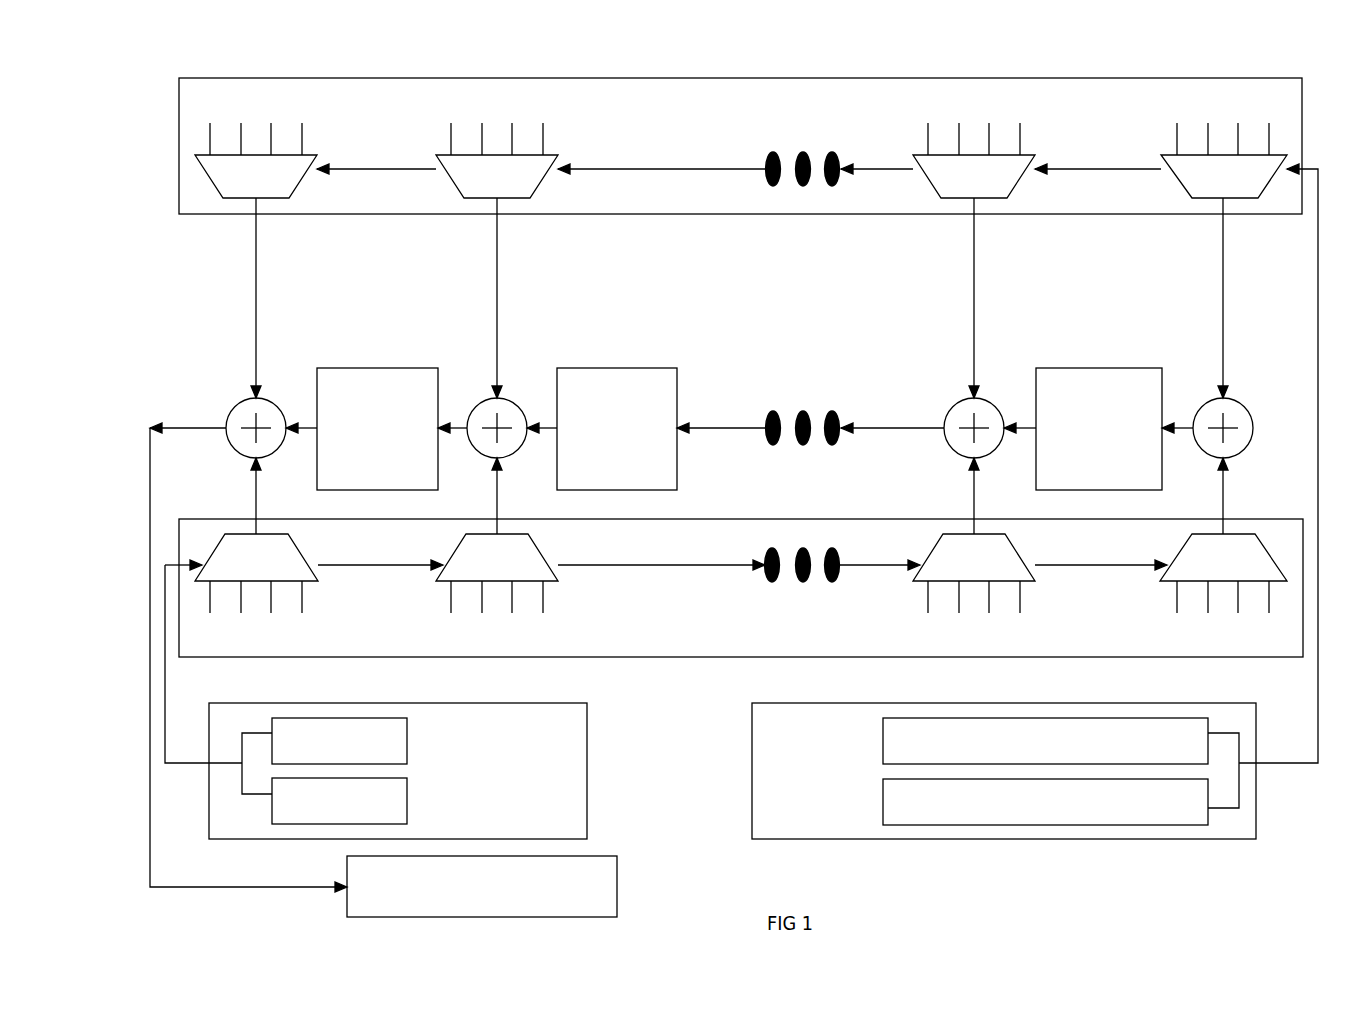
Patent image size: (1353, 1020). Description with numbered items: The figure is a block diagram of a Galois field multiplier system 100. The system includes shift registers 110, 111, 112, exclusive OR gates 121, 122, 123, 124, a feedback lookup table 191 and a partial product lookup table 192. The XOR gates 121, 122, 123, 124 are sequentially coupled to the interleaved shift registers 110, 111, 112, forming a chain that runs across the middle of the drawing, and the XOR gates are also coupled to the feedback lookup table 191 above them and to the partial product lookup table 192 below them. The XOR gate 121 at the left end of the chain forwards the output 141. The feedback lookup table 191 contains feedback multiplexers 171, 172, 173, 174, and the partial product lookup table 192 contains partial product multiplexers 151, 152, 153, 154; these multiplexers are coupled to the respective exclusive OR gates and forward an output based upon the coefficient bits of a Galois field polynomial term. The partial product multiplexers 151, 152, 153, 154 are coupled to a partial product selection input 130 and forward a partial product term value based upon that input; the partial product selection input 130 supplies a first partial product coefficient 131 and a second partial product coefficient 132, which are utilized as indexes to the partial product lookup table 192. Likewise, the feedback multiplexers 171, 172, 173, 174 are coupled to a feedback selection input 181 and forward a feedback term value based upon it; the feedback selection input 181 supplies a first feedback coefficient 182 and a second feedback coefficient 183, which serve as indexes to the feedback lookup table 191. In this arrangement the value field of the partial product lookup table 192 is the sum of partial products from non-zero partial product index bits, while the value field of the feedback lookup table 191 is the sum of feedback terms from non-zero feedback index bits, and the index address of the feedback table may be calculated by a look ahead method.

The Galois field multiplier system 100 is at (810, 36).
The shift register 110 is at (362, 429).
The shift register 111 is at (646, 429).
The shift register 112 is at (1083, 429).
The exclusive OR gate 121 is at (270, 390).
The exclusive OR gate 122 is at (512, 390).
The exclusive OR gate 123 is at (988, 390).
The exclusive OR gate 124 is at (1240, 390).
The partial product selection input 130 is at (376, 702).
The first partial product coefficient 131 is at (339, 738).
The second partial product coefficient 132 is at (339, 798).
The output 141 is at (383, 672).
The partial product multiplexer 151 is at (241, 535).
The partial product multiplexer 152 is at (438, 535).
The partial product multiplexer 153 is at (937, 535).
The partial product multiplexer 154 is at (1161, 535).
The feedback multiplexer 171 is at (256, 260).
The feedback multiplexer 172 is at (437, 260).
The feedback multiplexer 173 is at (938, 260).
The feedback multiplexer 174 is at (1161, 260).
The feedback selection input 181 is at (1035, 501).
The first feedback coefficient 182 is at (1045, 741).
The second feedback coefficient 183 is at (1045, 802).
The feedback lookup table 191 is at (740, 146).
The partial product lookup table 192 is at (741, 588).